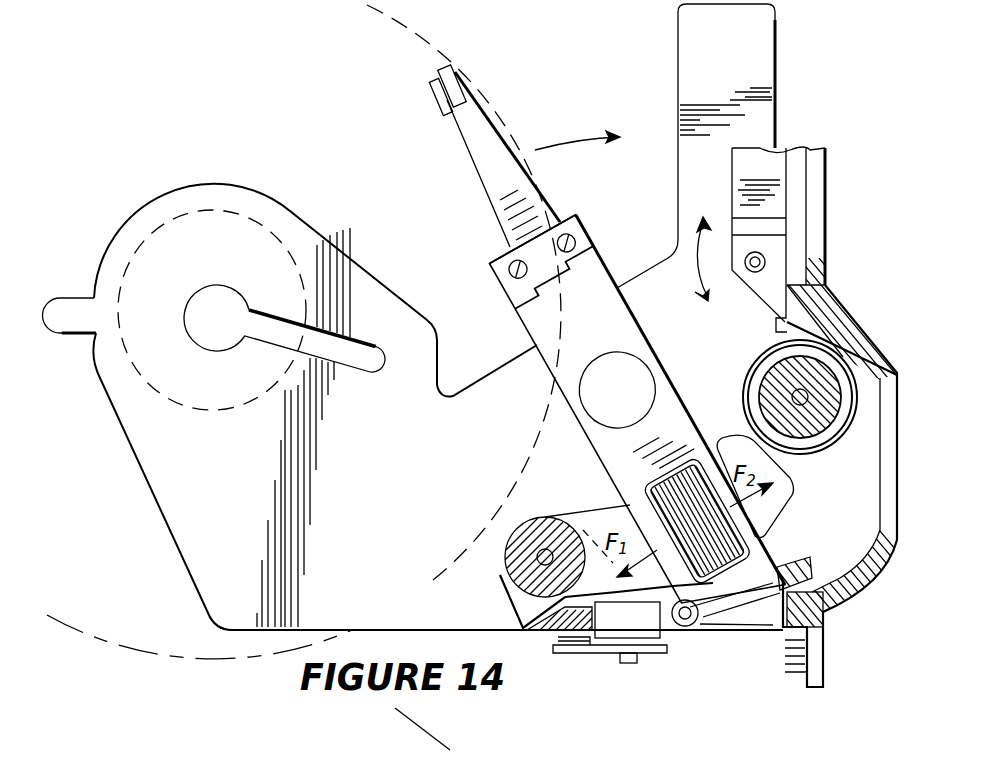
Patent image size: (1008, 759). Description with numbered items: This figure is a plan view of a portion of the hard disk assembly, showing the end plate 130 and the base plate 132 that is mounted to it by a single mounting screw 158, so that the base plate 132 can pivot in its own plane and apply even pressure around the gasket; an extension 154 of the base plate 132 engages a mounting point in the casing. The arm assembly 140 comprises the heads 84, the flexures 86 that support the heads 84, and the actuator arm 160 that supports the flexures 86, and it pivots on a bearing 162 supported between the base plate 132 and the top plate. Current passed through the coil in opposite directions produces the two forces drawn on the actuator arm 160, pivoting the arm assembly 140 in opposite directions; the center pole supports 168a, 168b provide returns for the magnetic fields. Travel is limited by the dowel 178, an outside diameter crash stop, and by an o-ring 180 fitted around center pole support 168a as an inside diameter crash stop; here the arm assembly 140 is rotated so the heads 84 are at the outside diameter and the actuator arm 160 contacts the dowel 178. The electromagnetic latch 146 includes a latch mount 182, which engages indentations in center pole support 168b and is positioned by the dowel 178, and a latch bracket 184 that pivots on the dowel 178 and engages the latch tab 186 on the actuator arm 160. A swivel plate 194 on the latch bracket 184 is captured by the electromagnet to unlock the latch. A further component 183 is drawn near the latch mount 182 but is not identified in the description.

The heads 84 is at (458, 80).
The flexures 86 is at (480, 137).
The end plate 130 is at (813, 157).
The base plate 132 is at (750, 62).
The arm assembly 140 is at (637, 424).
The electromagnetic latch 146 is at (663, 652).
The extension 154 is at (61, 320).
The mounting screw 158 is at (768, 260).
The actuator arm 160 is at (588, 293).
The bearing 162 is at (637, 372).
The center pole support 168a is at (516, 556).
The center pole support 168b is at (817, 385).
The dowel 178 is at (692, 626).
The o-ring 180 is at (760, 358).
The latch mount 182 is at (543, 633).
The switch housing 183 is at (650, 634).
The latch bracket 184 is at (780, 567).
The latch tab 186 is at (740, 600).
The swivel plate 194 is at (632, 663).